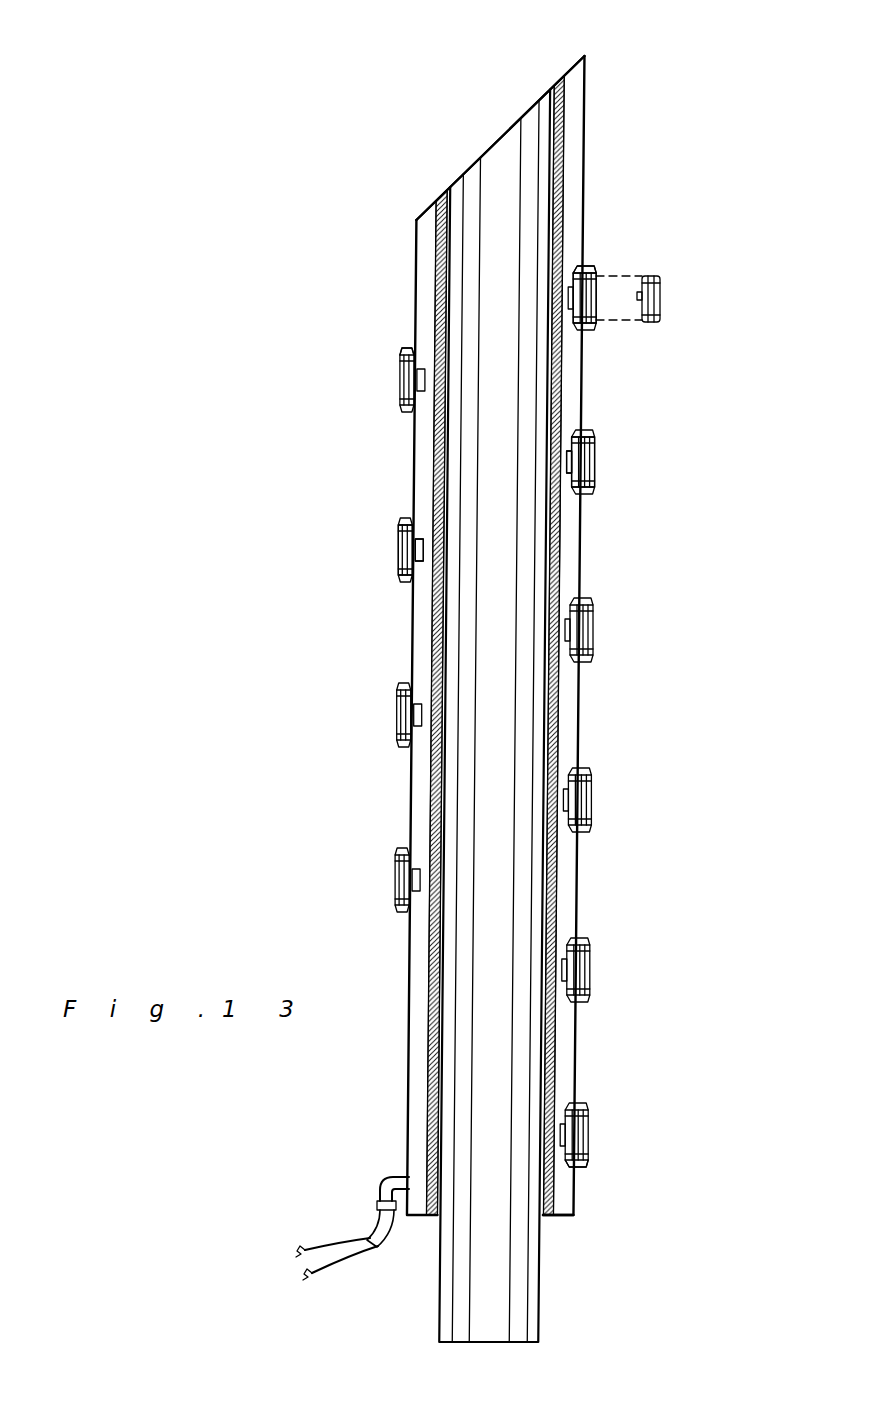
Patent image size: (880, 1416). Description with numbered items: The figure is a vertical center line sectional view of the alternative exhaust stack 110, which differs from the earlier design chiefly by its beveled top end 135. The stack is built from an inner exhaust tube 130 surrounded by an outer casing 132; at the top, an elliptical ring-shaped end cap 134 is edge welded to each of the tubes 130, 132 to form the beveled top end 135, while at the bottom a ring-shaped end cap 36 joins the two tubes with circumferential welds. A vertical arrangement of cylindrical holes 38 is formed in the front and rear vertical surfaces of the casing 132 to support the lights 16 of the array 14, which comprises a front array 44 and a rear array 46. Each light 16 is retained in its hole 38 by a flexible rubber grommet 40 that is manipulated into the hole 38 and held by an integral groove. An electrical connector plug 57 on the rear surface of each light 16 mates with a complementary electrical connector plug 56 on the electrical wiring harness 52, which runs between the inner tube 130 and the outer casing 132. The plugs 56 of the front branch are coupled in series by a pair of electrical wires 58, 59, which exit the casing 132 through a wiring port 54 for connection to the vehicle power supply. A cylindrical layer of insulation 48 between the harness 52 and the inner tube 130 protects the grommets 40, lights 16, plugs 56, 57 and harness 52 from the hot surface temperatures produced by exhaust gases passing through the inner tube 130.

The exhaust stack 110 is at (392, 92).
The inner exhaust tube 130 is at (543, 1313).
The outer casing 132 is at (415, 290).
The elliptical ring-shaped end cap 134 is at (437, 205).
The beveled top end 135 is at (545, 78).
The array 14 is at (617, 205).
The light 16 is at (655, 323).
The end cap 36 is at (553, 1218).
The hole 38 is at (590, 432).
The rubber grommet 40 is at (590, 270).
The front array 44 is at (600, 778).
The rear array 46 is at (396, 535).
The insulation 48 is at (555, 880).
The electrical wiring harness 52 is at (383, 1228).
The wiring port 54 is at (395, 1175).
The electrical connector plug 56 is at (427, 352).
The electrical connector plug 57 is at (640, 288).
The electrical wire 58 is at (416, 1070).
The electrical wire 59 is at (590, 1170).